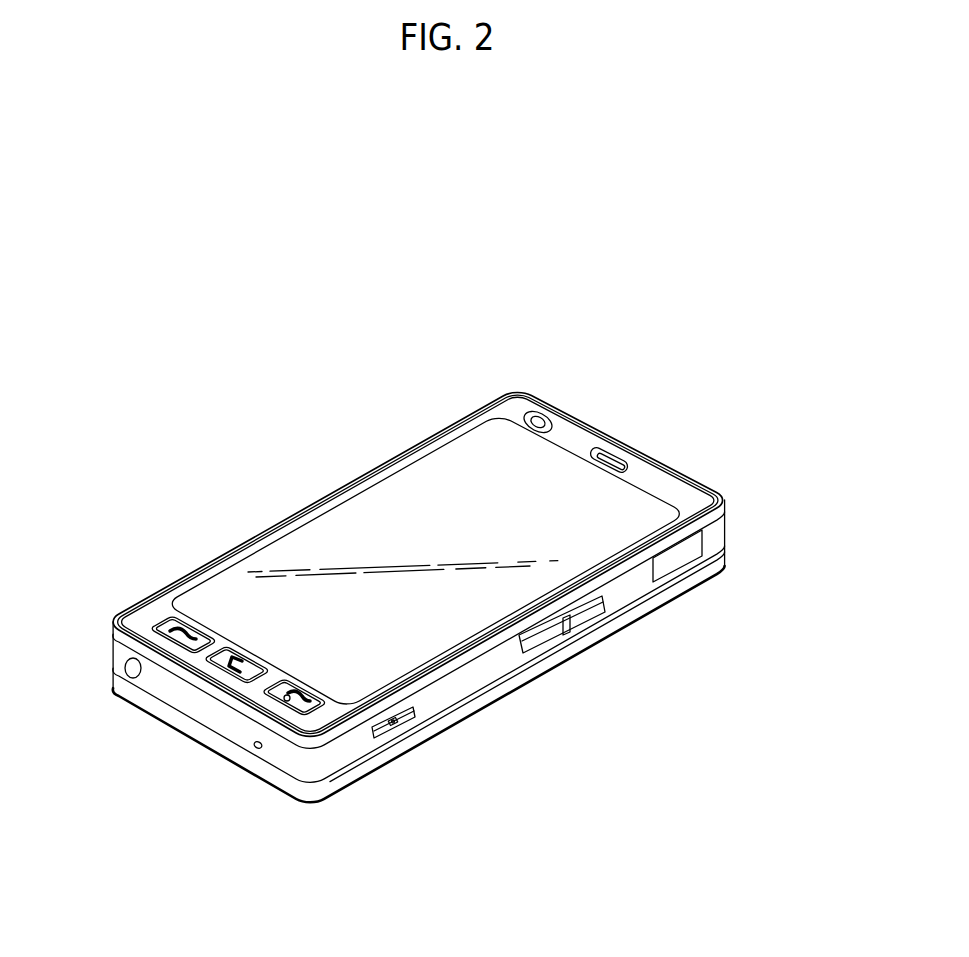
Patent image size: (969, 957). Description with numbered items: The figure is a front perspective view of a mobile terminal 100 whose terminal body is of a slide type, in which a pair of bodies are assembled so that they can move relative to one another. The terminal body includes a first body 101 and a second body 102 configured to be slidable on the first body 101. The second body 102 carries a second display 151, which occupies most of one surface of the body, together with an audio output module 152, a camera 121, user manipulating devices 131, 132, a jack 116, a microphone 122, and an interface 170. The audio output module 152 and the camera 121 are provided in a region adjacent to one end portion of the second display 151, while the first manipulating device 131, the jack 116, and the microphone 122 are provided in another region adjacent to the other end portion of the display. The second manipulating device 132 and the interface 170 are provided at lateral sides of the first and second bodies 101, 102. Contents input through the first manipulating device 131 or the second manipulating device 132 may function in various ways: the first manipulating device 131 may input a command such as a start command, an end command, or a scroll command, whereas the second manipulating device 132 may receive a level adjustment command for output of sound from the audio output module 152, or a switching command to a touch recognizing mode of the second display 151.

The mobile terminal 100 is at (406, 424).
The first body 101 is at (712, 560).
The second body 102 is at (712, 532).
The jack 116 is at (132, 676).
The camera 121 is at (540, 421).
The microphone 122 is at (256, 749).
The first manipulating device 131 is at (157, 630).
The second manipulating device 132 is at (595, 612).
The second display 151 is at (373, 513).
The audio output module 152 is at (608, 464).
The interface 170 is at (673, 560).